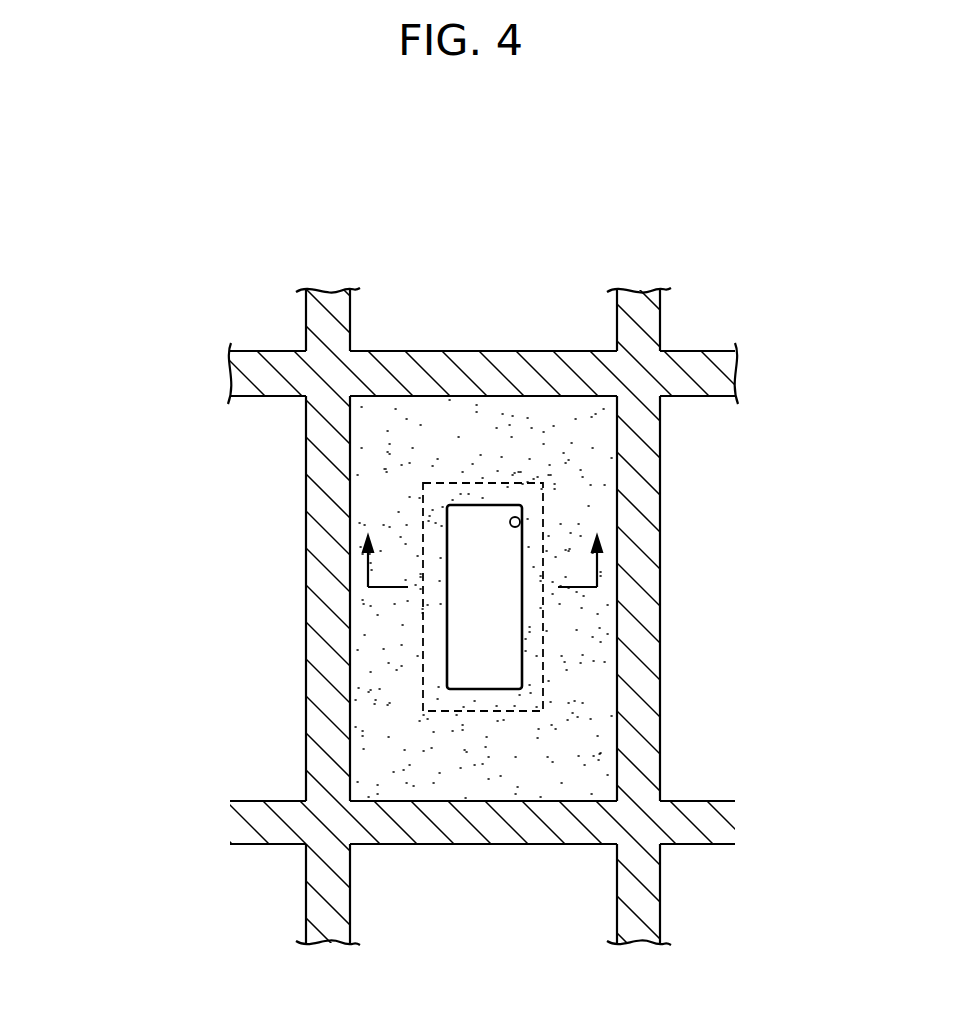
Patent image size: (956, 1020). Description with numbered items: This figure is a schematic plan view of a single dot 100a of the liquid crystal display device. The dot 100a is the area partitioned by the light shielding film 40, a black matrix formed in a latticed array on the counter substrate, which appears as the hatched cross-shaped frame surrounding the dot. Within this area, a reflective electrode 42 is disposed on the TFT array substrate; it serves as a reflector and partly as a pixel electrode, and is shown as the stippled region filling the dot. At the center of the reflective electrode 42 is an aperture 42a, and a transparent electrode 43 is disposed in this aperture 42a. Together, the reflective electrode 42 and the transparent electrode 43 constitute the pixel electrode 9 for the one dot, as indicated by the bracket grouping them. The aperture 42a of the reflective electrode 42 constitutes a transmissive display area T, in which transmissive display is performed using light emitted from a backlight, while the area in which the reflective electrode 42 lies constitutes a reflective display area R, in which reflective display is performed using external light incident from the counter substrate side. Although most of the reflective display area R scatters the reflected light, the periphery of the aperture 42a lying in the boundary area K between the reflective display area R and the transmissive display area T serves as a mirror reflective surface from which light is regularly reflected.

The dot 100a is at (482, 244).
The light shielding film 40 is at (642, 292).
The pixel electrode 9 is at (118, 480).
The reflective electrode 42 is at (387, 505).
The aperture 42a is at (521, 512).
The transparent electrode 43 is at (480, 609).
The transmissive display area T is at (486, 607).
The boundary area K is at (523, 665).
The reflective display area R is at (590, 757).